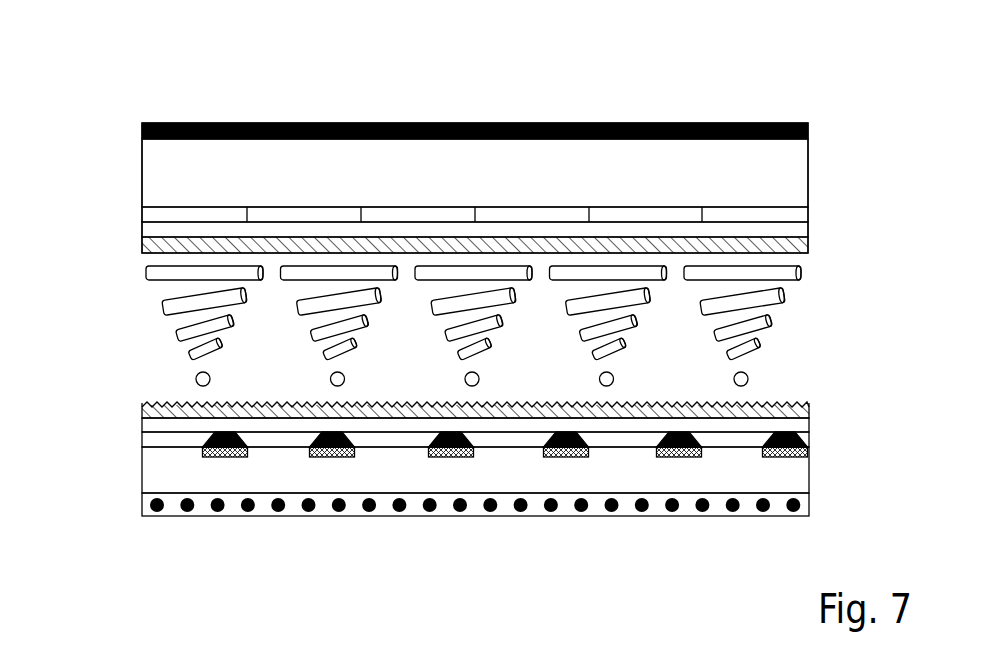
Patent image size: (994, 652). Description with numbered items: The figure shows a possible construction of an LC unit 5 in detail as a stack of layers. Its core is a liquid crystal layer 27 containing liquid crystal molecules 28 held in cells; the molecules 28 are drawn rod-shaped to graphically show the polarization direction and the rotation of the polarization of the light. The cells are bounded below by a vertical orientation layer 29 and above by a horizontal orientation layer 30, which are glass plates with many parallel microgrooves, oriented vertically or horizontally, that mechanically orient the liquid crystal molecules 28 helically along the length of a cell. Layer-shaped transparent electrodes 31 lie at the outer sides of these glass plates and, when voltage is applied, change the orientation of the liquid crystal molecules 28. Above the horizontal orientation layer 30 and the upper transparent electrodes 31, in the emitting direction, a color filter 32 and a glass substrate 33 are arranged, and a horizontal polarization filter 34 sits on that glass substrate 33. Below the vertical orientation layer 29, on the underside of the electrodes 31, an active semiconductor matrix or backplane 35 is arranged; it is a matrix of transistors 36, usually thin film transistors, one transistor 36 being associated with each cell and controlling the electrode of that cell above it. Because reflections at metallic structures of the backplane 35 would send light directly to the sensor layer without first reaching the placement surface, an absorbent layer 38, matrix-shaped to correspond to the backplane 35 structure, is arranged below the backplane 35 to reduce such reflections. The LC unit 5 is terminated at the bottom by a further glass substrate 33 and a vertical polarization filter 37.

The LC unit 5 is at (195, 102).
The liquid crystal layer 27 is at (450, 327).
The liquid crystal molecules 28 is at (148, 277).
The vertical orientation layer 29 is at (142, 408).
The horizontal orientation layer 30 is at (805, 245).
The transparent electrodes 31 is at (146, 228).
The color filter 32 is at (800, 215).
The glass substrate 33 is at (146, 170).
The horizontal polarization filter 34 is at (808, 130).
The backplane 35 is at (145, 440).
The transistor 36 is at (800, 440).
The vertical polarization filter 37 is at (548, 514).
The absorbent layer 38 is at (449, 458).